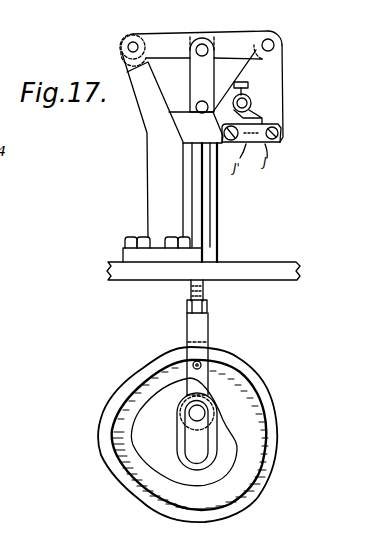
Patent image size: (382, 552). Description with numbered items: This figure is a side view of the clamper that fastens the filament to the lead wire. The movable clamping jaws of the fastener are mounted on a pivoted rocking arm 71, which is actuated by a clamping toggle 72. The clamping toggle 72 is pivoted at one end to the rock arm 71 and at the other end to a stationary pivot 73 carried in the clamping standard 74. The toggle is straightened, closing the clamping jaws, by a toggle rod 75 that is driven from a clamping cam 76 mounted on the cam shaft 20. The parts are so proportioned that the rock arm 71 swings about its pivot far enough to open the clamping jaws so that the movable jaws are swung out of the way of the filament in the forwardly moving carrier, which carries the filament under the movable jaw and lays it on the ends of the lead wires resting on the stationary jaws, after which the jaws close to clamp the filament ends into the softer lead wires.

The cam shaft 20 is at (190, 413).
The pivoted rocking arm 71 is at (270, 85).
The clamping toggle 72 is at (228, 43).
The stationary pivot 73 is at (128, 46).
The clamping standard 74 is at (146, 136).
The toggle rod 75 is at (204, 285).
The clamping cam 76 is at (124, 388).